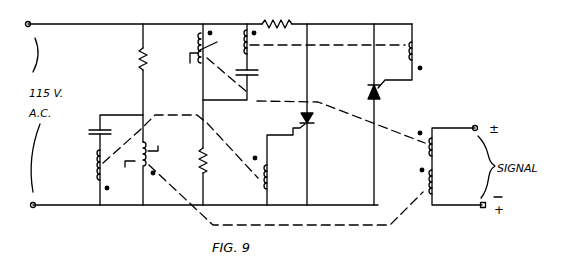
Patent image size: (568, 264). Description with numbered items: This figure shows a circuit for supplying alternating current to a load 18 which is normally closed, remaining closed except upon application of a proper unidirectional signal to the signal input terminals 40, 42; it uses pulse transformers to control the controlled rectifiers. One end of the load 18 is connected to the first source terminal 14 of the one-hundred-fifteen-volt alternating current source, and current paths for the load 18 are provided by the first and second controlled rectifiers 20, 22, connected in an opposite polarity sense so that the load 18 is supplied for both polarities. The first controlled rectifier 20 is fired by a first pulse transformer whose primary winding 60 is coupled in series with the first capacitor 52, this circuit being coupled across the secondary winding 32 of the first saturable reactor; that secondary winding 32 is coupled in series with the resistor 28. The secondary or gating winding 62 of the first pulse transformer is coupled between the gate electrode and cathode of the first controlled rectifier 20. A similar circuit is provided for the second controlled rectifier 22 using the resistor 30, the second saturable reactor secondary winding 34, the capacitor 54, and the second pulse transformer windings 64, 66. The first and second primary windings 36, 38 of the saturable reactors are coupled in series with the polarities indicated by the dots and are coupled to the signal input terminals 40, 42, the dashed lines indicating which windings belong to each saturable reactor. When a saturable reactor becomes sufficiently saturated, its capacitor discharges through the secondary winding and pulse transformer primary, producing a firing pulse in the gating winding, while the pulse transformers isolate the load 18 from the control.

The first source terminal 14 is at (28, 21).
The load 18 is at (275, 16).
The first controlled rectifier 20 is at (314, 121).
The second controlled rectifier 22 is at (381, 92).
The resistor 28 is at (137, 56).
The resistor 30 is at (208, 167).
The first secondary winding 32 is at (148, 146).
The second secondary winding 34 is at (199, 60).
The first primary winding 36 is at (428, 188).
The second primary winding 38 is at (428, 148).
The signal input terminal 40 is at (475, 125).
The signal input terminal 42 is at (480, 208).
The first capacitor 52 is at (88, 136).
The capacitor 54 is at (257, 78).
The primary winding of first pulse transformer 60 is at (96, 170).
The secondary or gating winding of first pulse transformer 62 is at (268, 184).
The primary winding of second pulse transformer 64 is at (251, 52).
The secondary or gating winding of second pulse transformer 66 is at (417, 49).